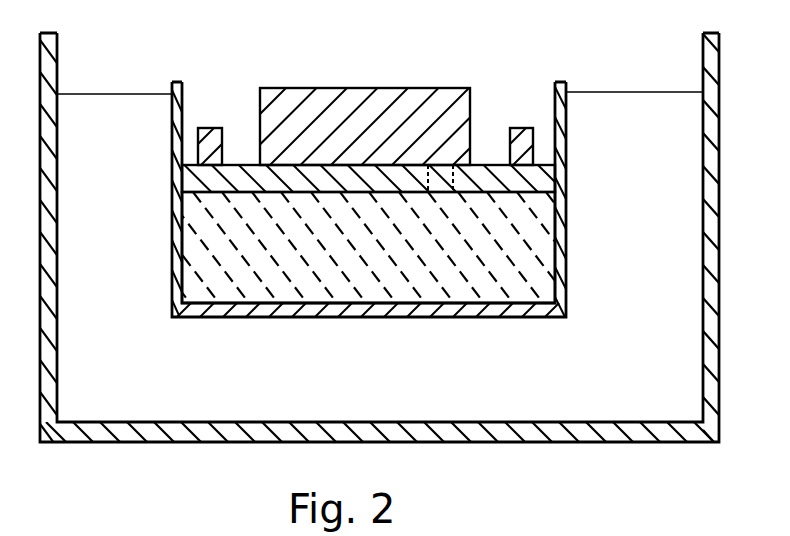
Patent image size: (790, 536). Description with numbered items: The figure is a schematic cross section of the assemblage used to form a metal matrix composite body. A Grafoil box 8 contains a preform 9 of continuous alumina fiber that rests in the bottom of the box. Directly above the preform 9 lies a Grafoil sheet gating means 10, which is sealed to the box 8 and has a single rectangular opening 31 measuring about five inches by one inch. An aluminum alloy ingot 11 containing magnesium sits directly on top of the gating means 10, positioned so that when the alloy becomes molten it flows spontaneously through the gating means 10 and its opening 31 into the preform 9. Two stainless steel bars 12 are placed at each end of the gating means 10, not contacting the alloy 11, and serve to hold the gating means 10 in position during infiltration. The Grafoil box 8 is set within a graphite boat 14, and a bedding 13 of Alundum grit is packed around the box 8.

The Grafoil box 8 is at (566, 85).
The preform 9 is at (548, 226).
The gating means 10 is at (545, 178).
The aluminum alloy ingot 11 is at (441, 88).
The stainless steel bars 12 is at (210, 128).
The bedding 13 is at (670, 370).
The graphite boat 14 is at (710, 412).
The rectangular opening 31 is at (440, 178).